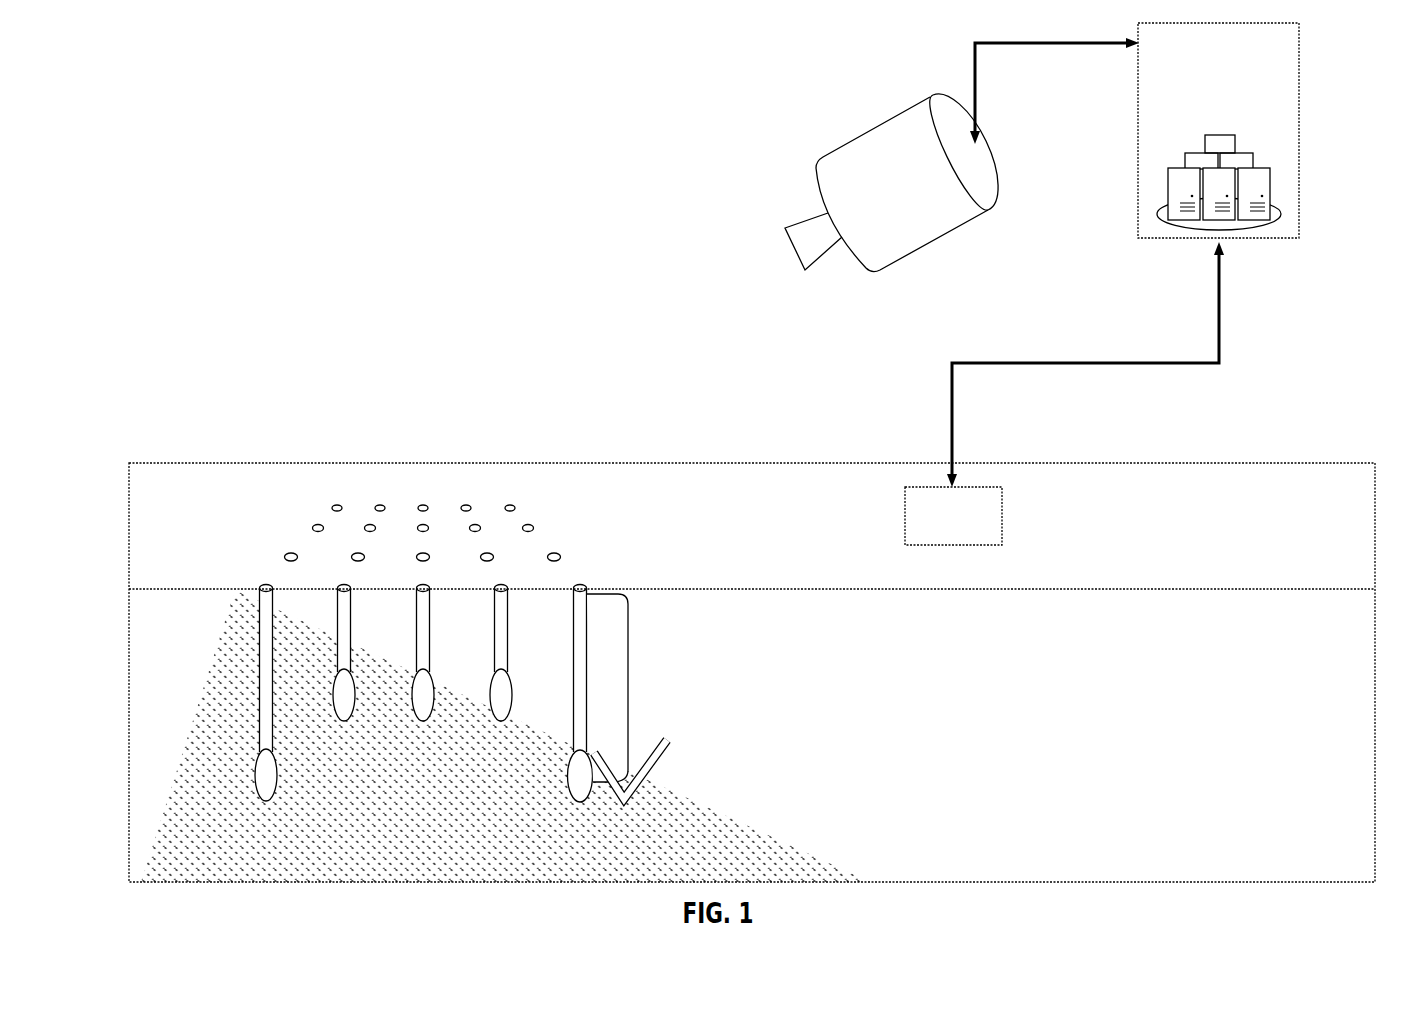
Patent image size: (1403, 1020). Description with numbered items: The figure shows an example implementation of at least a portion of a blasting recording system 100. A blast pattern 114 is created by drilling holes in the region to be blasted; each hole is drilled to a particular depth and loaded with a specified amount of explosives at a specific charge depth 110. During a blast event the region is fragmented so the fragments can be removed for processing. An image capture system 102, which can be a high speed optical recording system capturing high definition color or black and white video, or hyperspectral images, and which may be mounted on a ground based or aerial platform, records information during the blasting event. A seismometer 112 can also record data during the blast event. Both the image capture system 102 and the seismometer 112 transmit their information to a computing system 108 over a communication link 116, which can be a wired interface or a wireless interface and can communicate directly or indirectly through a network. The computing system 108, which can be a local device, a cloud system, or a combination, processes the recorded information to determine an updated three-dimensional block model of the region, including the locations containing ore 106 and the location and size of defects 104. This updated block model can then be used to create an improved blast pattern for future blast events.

The blasting recording system 100 is at (325, 182).
The image capture system 102 is at (878, 215).
The defects 104 is at (662, 757).
The ore 106 is at (795, 857).
The computing system 108 is at (1204, 105).
The charge depth 110 is at (628, 685).
The seismometer 112 is at (943, 535).
The blast pattern 114 is at (383, 440).
The communication link 116 is at (1103, 351).